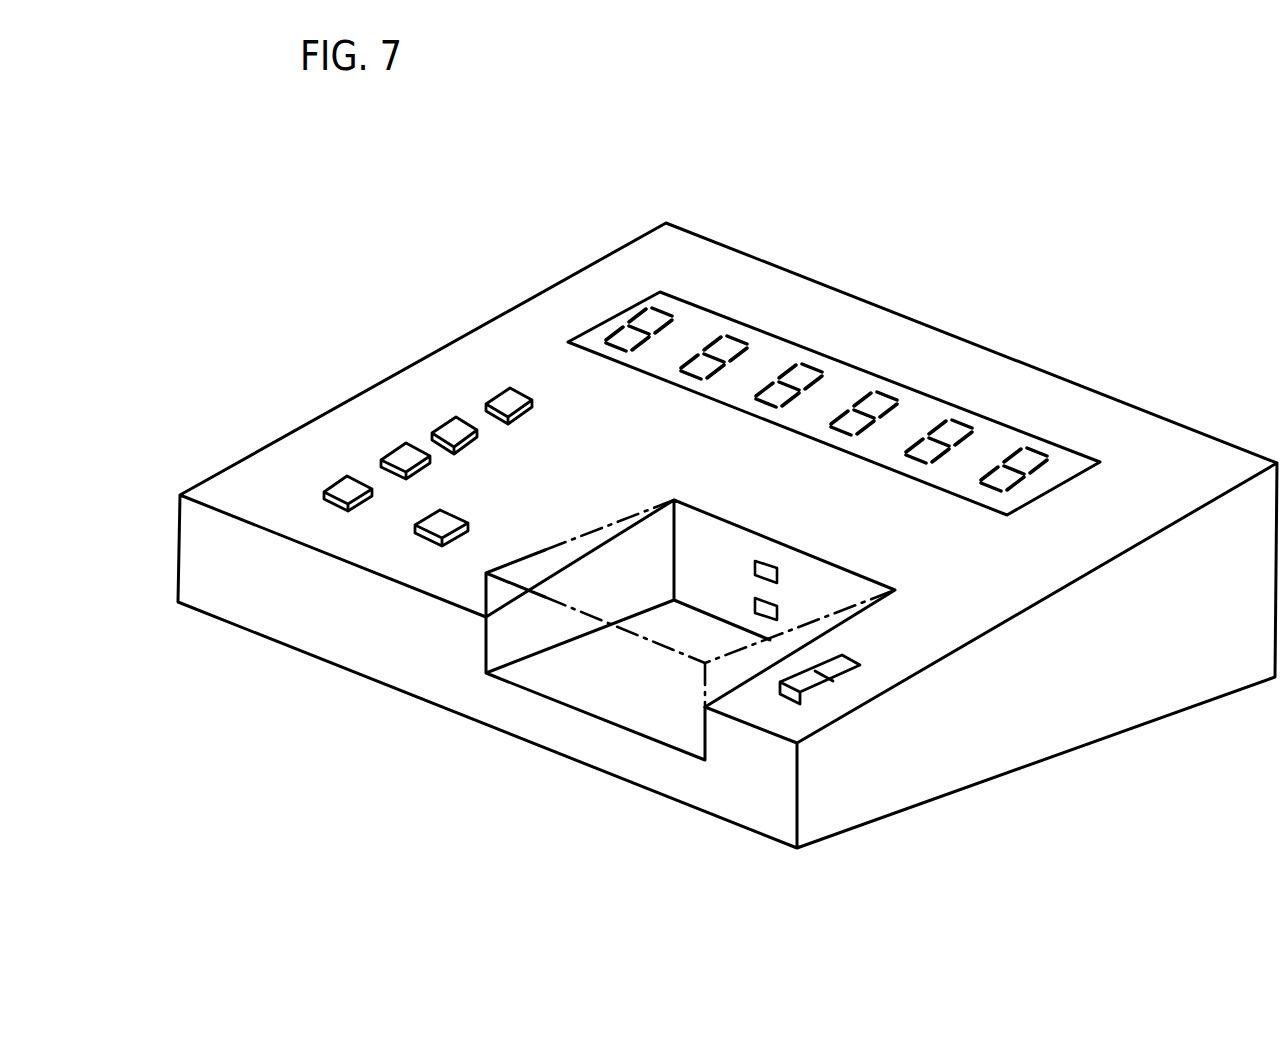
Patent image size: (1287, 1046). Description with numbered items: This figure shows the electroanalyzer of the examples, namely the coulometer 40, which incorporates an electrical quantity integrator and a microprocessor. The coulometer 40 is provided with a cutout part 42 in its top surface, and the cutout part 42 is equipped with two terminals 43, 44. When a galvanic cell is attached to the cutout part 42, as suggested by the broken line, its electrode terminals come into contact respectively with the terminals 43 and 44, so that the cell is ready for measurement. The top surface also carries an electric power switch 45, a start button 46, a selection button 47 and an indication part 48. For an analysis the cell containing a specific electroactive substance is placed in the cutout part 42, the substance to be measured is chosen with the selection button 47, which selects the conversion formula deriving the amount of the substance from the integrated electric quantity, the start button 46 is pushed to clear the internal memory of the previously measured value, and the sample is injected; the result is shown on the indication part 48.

The coulometer 40 is at (1123, 367).
The cutout part 42 is at (580, 681).
The terminal 43 is at (778, 574).
The terminal 44 is at (778, 612).
The electric power switch 45 is at (788, 690).
The start button 46 is at (425, 537).
The selection button 47 is at (387, 448).
The indication part 48 is at (867, 377).